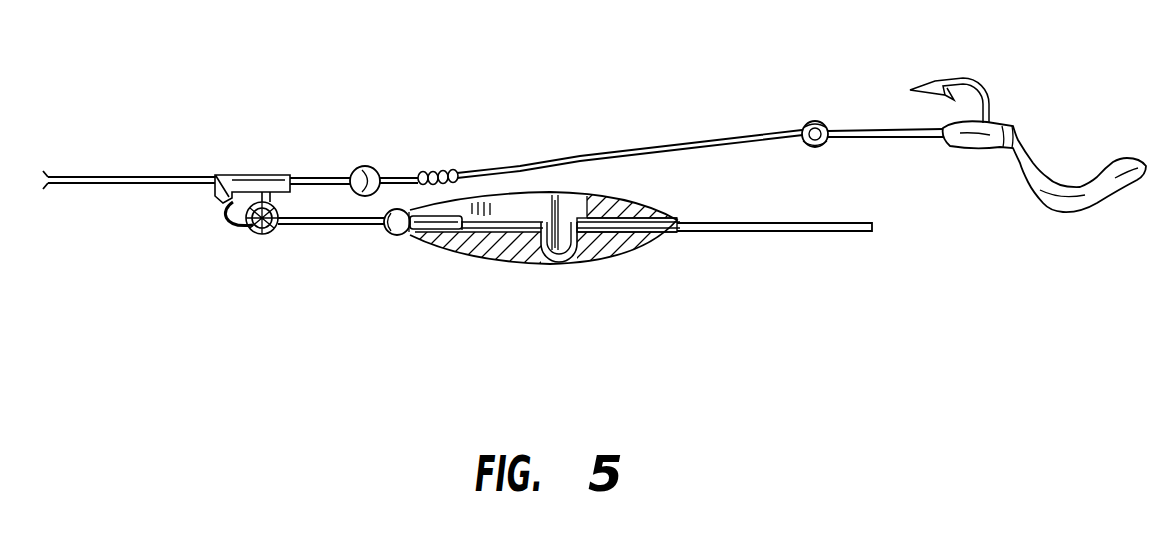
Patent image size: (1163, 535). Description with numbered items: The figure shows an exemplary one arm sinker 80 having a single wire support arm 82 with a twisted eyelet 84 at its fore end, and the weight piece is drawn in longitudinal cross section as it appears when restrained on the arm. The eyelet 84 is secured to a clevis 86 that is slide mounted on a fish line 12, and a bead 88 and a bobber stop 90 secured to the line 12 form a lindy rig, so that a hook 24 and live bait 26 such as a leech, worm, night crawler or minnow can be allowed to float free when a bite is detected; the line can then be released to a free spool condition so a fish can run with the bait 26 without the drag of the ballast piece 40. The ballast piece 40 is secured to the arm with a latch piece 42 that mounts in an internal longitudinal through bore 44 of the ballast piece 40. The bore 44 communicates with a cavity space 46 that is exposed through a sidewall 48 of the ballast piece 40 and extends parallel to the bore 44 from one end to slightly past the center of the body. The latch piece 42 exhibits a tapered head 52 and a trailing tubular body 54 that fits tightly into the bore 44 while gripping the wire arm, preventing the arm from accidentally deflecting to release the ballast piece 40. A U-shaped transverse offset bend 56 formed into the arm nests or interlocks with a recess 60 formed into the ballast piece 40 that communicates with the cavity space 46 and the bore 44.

The fish line 12 is at (90, 177).
The fish hook 24 is at (962, 80).
The live bait 26 is at (1047, 173).
The ballast piece 40 is at (635, 257).
The latch piece 42 is at (395, 237).
The longitudinal through bore 44 is at (677, 218).
The cavity space 46 is at (495, 210).
The sidewall 48 is at (558, 243).
The tapered head 52 is at (390, 233).
The tubular body 54 is at (443, 232).
The offset bend 56 is at (582, 205).
The recess 60 is at (575, 262).
The one arm sinker 80 is at (826, 222).
The wire support arm 82 is at (317, 224).
The twisted eyelet 84 is at (262, 233).
The clevis 86 is at (227, 173).
The bead 88 is at (355, 170).
The bobber stop 90 is at (445, 170).